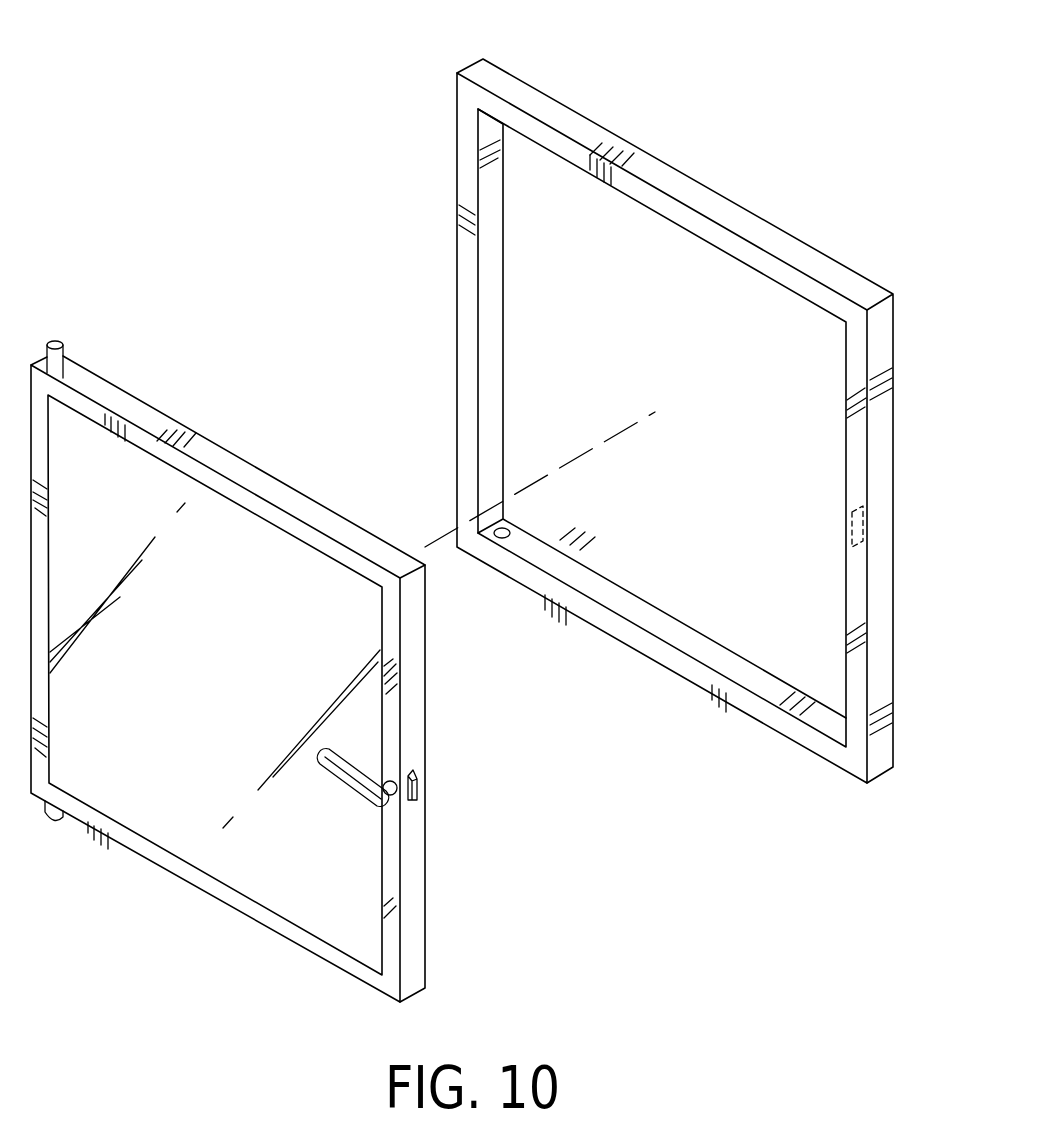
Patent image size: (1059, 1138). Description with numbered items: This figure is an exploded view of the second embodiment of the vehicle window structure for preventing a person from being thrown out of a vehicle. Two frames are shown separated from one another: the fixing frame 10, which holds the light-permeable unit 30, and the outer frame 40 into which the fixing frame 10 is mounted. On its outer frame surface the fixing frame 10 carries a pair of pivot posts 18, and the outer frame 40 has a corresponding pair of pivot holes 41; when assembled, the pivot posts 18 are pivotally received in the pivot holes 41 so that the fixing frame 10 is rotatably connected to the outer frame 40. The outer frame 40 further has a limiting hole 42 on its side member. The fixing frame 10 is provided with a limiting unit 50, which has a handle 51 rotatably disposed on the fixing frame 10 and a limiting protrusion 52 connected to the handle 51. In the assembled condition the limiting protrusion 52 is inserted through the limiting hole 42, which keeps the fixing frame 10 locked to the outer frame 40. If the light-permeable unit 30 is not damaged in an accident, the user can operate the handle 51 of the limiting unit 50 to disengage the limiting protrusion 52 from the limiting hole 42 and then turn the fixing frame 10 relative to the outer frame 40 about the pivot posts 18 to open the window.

The fixing frame 10 is at (240, 457).
The pivot posts 18 is at (55, 341).
The light-permeable unit 30 is at (383, 916).
The outer frame 40 is at (688, 175).
The pivot holes 41 is at (508, 531).
The limiting hole 42 is at (850, 532).
The limiting unit 50 is at (395, 800).
The handle 51 is at (358, 767).
The limiting protrusion 52 is at (419, 788).